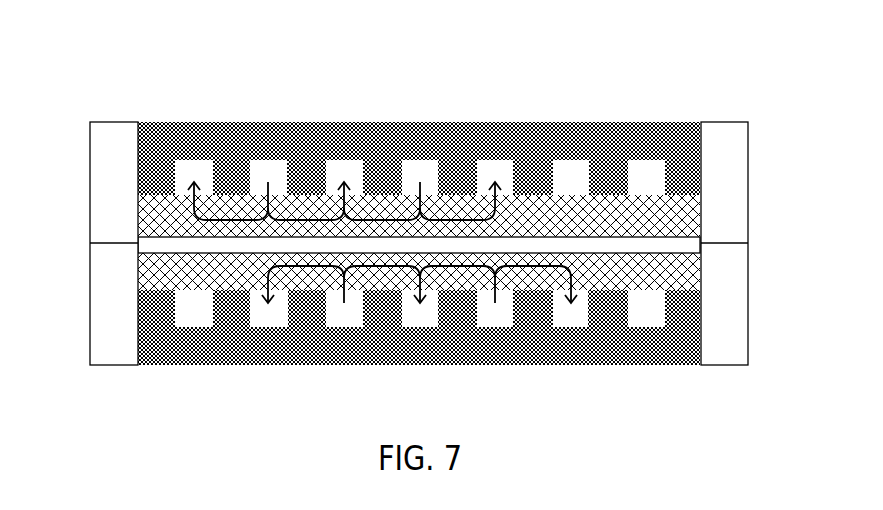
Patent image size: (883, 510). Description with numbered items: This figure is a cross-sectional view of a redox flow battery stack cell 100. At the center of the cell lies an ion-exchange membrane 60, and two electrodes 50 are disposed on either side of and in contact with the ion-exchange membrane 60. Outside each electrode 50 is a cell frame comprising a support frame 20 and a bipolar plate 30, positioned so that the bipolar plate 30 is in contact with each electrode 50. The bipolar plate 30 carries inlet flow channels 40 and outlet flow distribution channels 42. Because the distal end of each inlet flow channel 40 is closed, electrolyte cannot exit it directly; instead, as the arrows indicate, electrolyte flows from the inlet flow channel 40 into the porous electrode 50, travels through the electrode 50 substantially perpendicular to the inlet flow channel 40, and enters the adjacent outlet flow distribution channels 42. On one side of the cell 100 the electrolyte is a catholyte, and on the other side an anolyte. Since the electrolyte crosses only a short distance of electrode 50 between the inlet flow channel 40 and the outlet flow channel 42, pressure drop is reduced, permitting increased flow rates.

The redox flow battery stack cell 100 is at (392, 76).
The support frame 20 is at (727, 121).
The bipolar plate 30 is at (540, 132).
The inlet flow channel 40 is at (269, 172).
The outlet flow distribution channel 42 is at (194, 172).
The electrode 50 is at (690, 215).
The ion-exchange membrane 60 is at (690, 244).